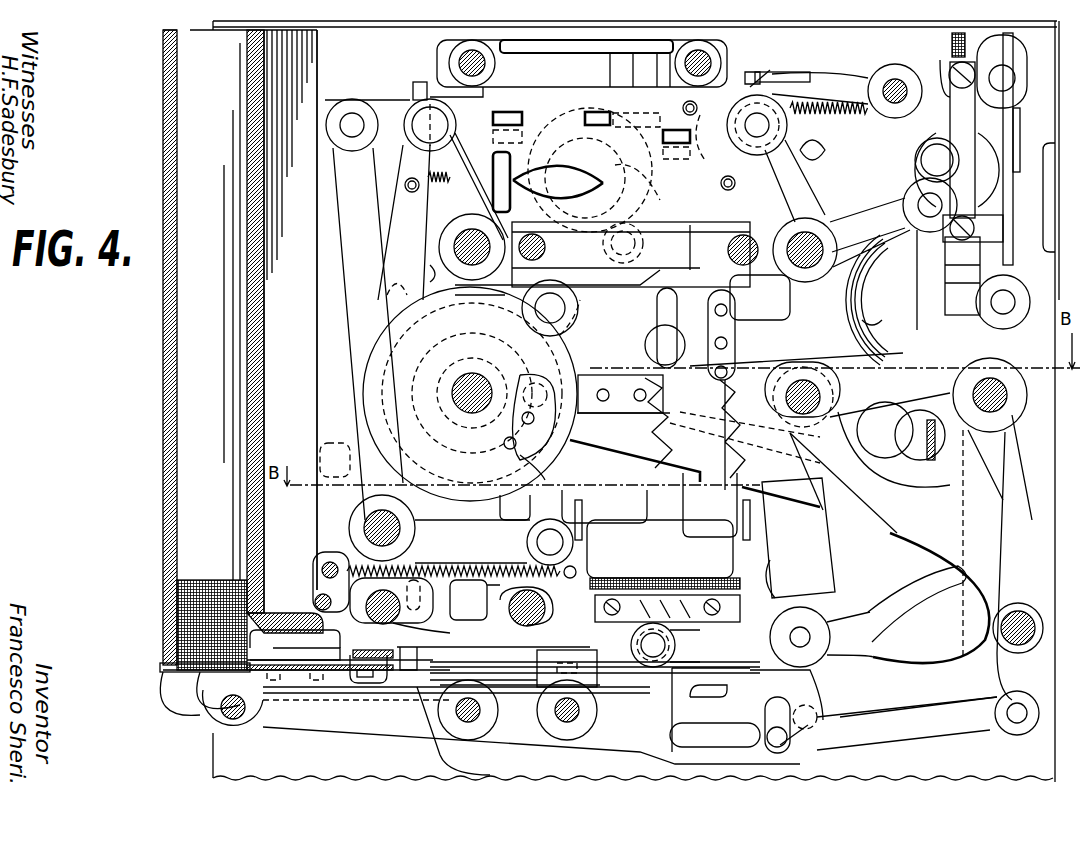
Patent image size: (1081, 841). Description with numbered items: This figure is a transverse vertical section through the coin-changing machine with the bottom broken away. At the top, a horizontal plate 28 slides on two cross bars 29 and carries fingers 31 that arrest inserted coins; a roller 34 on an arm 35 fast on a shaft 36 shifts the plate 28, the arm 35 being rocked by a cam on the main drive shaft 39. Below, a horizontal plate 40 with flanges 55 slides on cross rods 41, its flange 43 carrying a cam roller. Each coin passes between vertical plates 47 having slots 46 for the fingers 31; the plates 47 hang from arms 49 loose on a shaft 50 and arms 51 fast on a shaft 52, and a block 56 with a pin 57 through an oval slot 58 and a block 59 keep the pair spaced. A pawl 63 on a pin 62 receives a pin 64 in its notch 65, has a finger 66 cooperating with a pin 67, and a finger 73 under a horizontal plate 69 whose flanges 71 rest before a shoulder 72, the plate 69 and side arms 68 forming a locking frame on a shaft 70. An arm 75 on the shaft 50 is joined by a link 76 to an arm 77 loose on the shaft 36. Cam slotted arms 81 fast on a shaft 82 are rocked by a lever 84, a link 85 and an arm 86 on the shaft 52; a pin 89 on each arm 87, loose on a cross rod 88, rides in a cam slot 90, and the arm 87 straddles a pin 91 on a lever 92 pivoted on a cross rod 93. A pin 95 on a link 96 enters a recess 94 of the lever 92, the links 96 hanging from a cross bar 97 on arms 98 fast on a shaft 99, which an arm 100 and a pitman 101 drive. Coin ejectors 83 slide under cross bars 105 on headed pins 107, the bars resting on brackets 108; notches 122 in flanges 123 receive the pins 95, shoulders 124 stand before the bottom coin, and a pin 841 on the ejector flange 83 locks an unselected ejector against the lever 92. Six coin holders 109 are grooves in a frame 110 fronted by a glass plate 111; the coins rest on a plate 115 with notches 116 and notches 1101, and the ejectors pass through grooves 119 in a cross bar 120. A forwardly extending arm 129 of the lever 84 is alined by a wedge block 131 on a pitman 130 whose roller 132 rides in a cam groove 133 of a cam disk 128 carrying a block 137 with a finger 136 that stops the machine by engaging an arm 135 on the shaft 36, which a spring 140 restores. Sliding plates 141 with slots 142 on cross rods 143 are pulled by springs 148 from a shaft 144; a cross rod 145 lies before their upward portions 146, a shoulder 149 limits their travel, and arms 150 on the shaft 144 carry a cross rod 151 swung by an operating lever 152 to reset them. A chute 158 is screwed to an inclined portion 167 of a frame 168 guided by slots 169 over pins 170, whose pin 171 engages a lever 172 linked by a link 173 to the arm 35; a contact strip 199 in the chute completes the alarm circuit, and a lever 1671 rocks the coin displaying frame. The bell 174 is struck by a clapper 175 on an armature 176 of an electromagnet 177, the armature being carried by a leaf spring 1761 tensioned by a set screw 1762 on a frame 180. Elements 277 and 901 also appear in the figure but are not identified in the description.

The horizontal plate 28 is at (590, 47).
The cross bars 29 is at (455, 52).
The fingers 31 is at (585, 145).
The roller 34 is at (418, 85).
The arm 35 is at (395, 178).
The shaft 36 is at (345, 522).
The main drive shaft 39 is at (460, 405).
The horizontal plate 40 is at (745, 270).
The cross rods 41 is at (785, 227).
The horizontal flange 43 is at (578, 300).
The slots 46 is at (685, 160).
The plates 47 is at (520, 95).
The arms 49 is at (435, 205).
The shaft 50 is at (452, 245).
The arms 51 is at (805, 192).
The shaft 52 is at (818, 275).
The flanges 55 is at (765, 288).
The block 56 is at (493, 160).
The pin 57 is at (495, 195).
The oval shaped slot 58 is at (555, 170).
The block 59 is at (525, 158).
The pin 62 is at (683, 108).
The pawl 63 is at (690, 238).
The pin 64 is at (730, 192).
The notch 65 is at (720, 250).
The finger 66 is at (810, 155).
The pin 67 is at (705, 123).
The side arms 68 is at (835, 78).
The horizontal plate 69 is at (775, 72).
The shaft 70 is at (897, 85).
The flanges 71 is at (757, 125).
The shoulder 72 is at (720, 88).
The finger 73 is at (758, 72).
The arm 75 is at (405, 165).
The link 76 is at (385, 110).
The arm 77 is at (338, 225).
The cam slotted arms 81 is at (815, 545).
The shaft 82 is at (803, 385).
The coin ejectors 83 is at (800, 690).
The lever 84 is at (872, 412).
The link 85 is at (880, 285).
The arm 86 is at (868, 215).
The arms 87 is at (890, 610).
The cross rod 88 is at (1020, 615).
The pin 89 is at (800, 630).
The cam slot 90 is at (860, 610).
The pin 91 is at (665, 648).
The levers 92 is at (650, 752).
The cross rod 93 is at (480, 712).
The recess 94 is at (680, 700).
The pin 95 is at (805, 760).
The links 96 is at (905, 720).
The cross bar 97 is at (1013, 733).
The arms 98 is at (995, 550).
The shaft 99 is at (1000, 410).
The arm 100 is at (995, 485).
The pitman 101 is at (785, 505).
The cross bars 105 is at (395, 655).
The headed pins 107 is at (575, 690).
The brackets 108 is at (590, 720).
The coin holders 109 is at (165, 440).
The solid frame 110 is at (307, 46).
The glass plate 111 is at (163, 418).
The horizontal plate 115 is at (190, 720).
The semicircular notches 116 is at (180, 688).
The grooves 119 is at (300, 660).
The cross bar 120 is at (335, 650).
The notches 122 is at (745, 710).
The flanges 123 is at (820, 715).
The shoulders 124 is at (165, 665).
The cam disk 128 is at (578, 325).
The forwardly extending arm 129 is at (760, 370).
The pitman 130 is at (590, 375).
The block 131 is at (612, 385).
The roller 132 is at (540, 380).
The cam groove 133 is at (425, 330).
The arm 135 is at (535, 497).
The finger 136 is at (545, 470).
The block 137 is at (695, 447).
The spring 140 is at (822, 107).
The sliding plates 141 is at (590, 580).
The guiding slots 142 is at (520, 600).
The cross rods 143 is at (500, 625).
The shaft 144 is at (320, 573).
The cross rod 145 is at (560, 545).
The upwardly extending portions 146 is at (600, 510).
The springs 148 is at (520, 530).
The shoulder 149 is at (450, 670).
The arms 150 is at (312, 588).
The cross rod 151 is at (318, 603).
The operating lever 152 is at (322, 448).
The chute 158 is at (760, 460).
The inclined portion 167 is at (670, 600).
The frame 168 is at (640, 470).
The slots 169 is at (665, 328).
The pins 170 is at (700, 345).
The pin 171 is at (610, 243).
The lever 172 is at (622, 250).
The link 173 is at (440, 275).
The bell 174 is at (862, 312).
The clapper 175 is at (928, 152).
The armature 176 is at (975, 152).
The electromagnet 177 is at (990, 180).
The frame 180 is at (1000, 292).
The contact strip 199 is at (775, 565).
The pin 277 is at (930, 450).
The pin 841 is at (907, 728).
The cam edge 901 is at (646, 189).
The notches 1101 is at (233, 701).
The lever 1671 is at (450, 758).
The leaf spring 1761 is at (920, 168).
The set screw 1762 is at (915, 215).